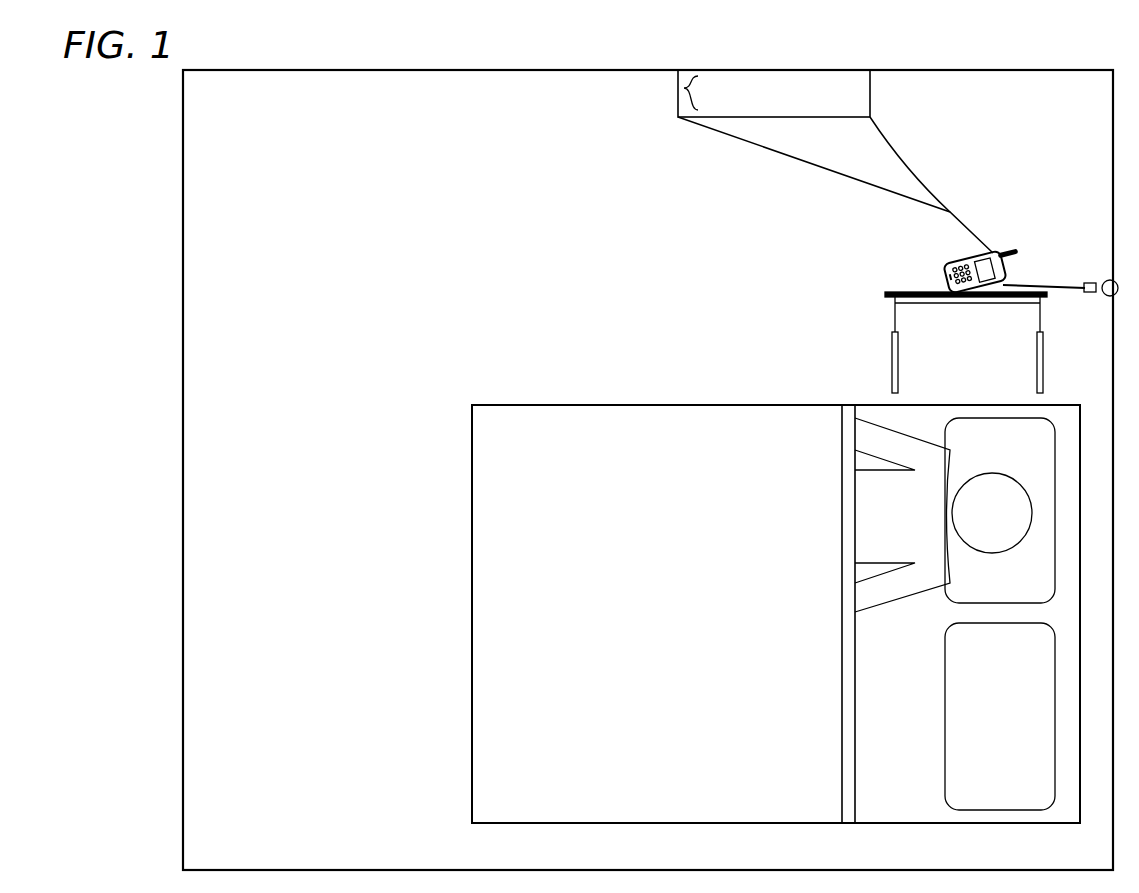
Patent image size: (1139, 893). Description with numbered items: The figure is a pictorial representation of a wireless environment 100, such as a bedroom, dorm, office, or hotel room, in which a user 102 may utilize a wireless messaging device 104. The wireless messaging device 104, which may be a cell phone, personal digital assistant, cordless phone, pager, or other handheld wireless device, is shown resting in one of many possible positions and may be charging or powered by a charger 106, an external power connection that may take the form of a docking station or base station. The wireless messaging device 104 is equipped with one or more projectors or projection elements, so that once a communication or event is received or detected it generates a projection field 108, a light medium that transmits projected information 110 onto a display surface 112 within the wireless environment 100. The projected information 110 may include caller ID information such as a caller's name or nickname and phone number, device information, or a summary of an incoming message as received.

The wireless environment 100 is at (375, 183).
The user 102 is at (1009, 523).
The wireless messaging device 104 is at (951, 271).
The charger 106 is at (1090, 283).
The projection field 108 is at (951, 213).
The projected information 110 is at (684, 88).
The display surface 112 is at (912, 69).